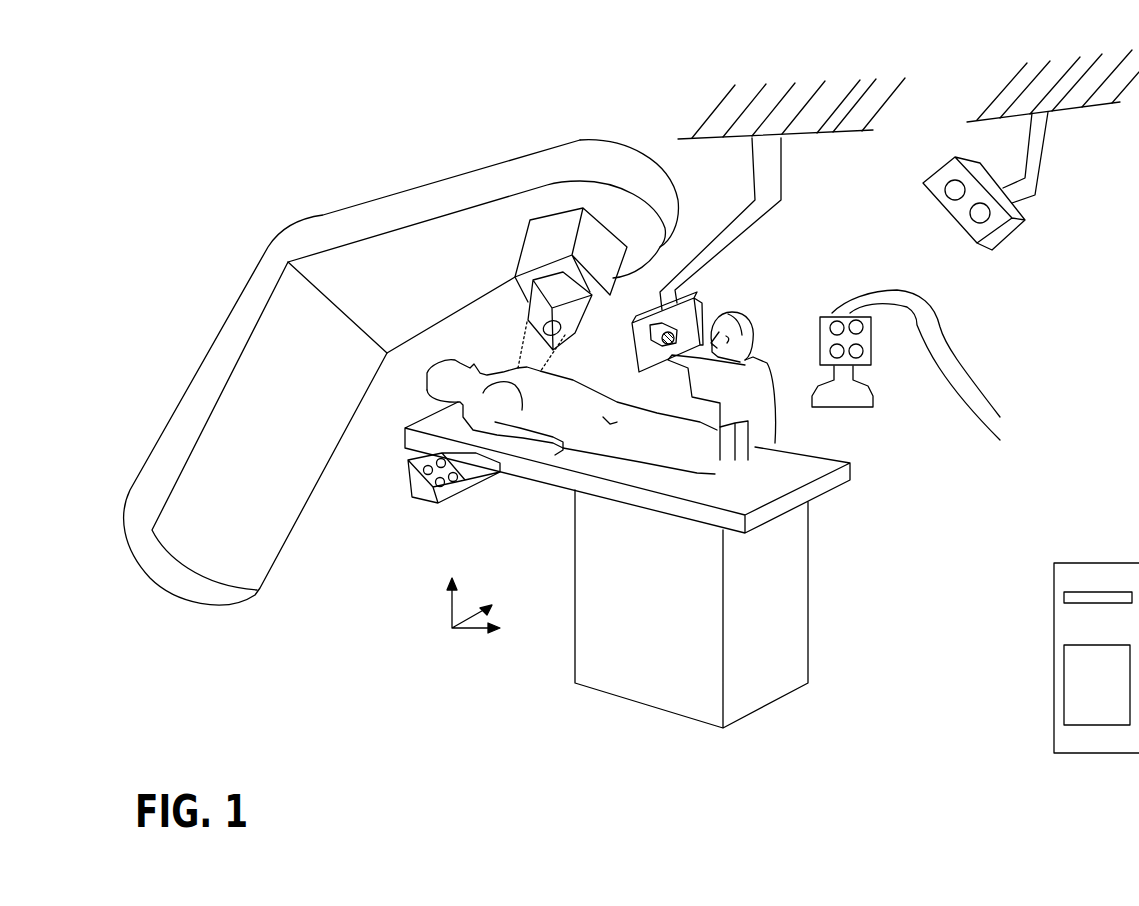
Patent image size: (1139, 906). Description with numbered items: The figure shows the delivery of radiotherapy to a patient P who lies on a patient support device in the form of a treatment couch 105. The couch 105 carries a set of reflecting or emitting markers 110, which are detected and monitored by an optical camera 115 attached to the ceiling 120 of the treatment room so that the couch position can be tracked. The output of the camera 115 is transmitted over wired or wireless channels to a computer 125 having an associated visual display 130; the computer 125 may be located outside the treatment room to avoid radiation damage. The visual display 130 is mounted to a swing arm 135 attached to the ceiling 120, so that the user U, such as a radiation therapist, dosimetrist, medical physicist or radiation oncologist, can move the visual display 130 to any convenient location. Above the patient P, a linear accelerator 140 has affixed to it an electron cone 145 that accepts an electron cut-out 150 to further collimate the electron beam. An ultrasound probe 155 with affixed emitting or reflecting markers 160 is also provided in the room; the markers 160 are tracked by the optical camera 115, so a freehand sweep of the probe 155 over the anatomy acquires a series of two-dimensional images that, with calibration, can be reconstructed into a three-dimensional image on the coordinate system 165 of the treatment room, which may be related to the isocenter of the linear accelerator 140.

The treatment couch 105 is at (788, 482).
The markers 110 is at (427, 483).
The optical camera 115 is at (1005, 238).
The ceiling 120 is at (908, 86).
The computer 125 is at (1100, 555).
The visual display 130 is at (703, 307).
The swing arm 135 is at (765, 193).
The linear accelerator 140 is at (275, 388).
The electron cone 145 is at (553, 293).
The electron cut-out 150 is at (528, 322).
The ultrasound probe 155 is at (878, 400).
The markers 160 is at (855, 332).
The coordinate system 165 is at (483, 621).
The patient P is at (557, 422).
The user U is at (747, 402).